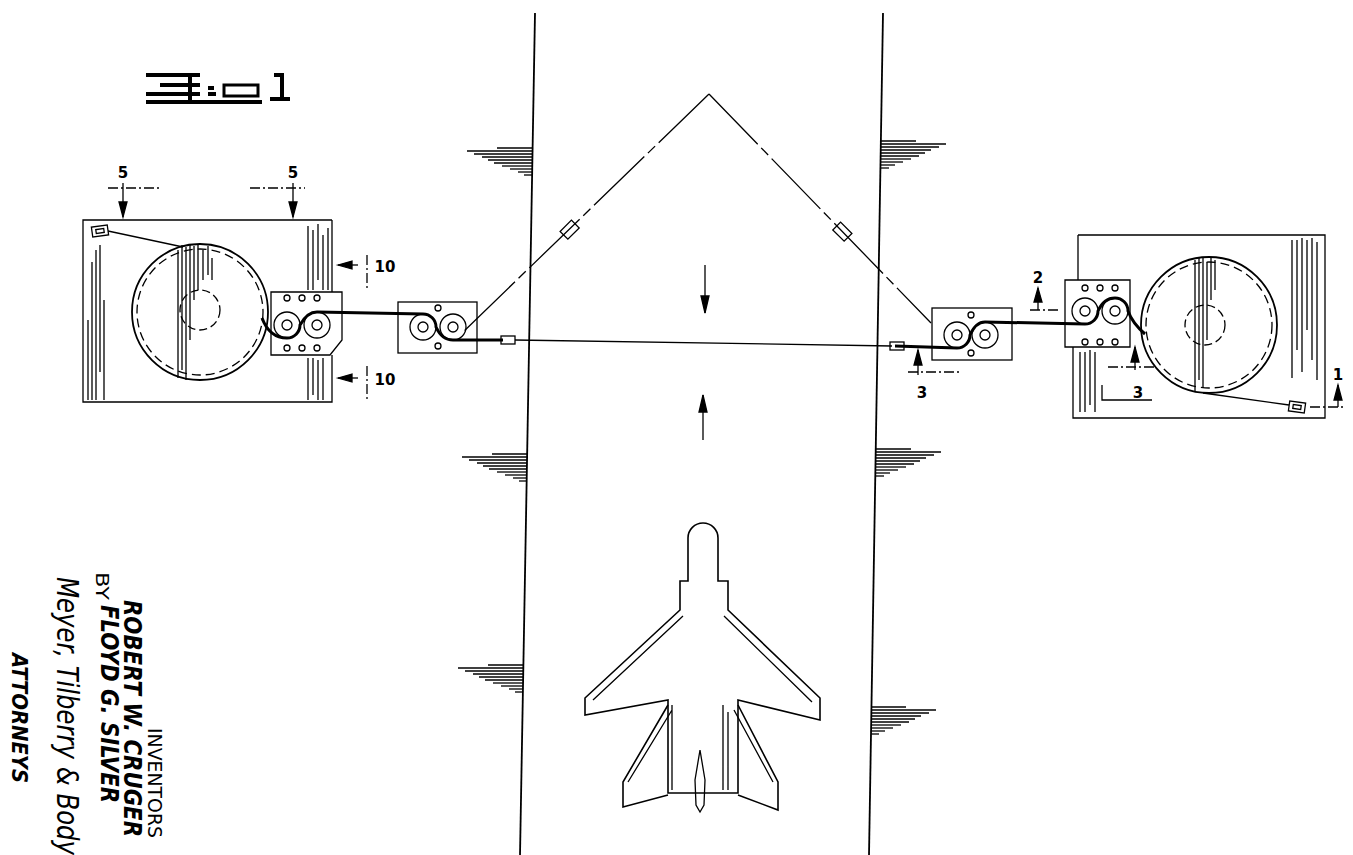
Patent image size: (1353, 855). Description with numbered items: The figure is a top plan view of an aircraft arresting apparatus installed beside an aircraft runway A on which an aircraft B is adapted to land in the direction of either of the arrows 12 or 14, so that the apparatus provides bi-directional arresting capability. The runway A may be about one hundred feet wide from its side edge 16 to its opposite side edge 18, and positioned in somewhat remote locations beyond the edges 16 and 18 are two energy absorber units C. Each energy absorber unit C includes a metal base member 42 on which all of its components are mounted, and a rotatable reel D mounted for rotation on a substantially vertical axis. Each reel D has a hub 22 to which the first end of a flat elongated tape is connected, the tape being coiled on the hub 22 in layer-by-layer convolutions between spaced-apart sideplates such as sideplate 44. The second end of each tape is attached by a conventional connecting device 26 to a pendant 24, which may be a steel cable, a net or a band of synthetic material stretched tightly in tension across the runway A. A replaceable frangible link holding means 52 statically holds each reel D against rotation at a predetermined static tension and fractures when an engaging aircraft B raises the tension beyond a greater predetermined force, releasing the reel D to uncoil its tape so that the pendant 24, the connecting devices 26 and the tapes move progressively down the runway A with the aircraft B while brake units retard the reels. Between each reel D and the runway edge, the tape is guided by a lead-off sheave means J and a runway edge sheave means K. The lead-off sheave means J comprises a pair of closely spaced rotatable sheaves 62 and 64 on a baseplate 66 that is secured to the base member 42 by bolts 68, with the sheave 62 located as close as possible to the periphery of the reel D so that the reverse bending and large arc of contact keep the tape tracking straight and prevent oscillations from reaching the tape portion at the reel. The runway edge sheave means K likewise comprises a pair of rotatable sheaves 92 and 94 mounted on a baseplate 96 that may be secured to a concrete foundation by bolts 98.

The arrow 12 is at (706, 282).
The arrow 14 is at (705, 420).
The side edge 16 is at (525, 558).
The side edge 18 is at (874, 587).
The hub 22 is at (178, 322).
The pendant 24 is at (655, 343).
The connecting device 26 is at (515, 338).
The base member 42 is at (85, 268).
The sideplate 44 is at (215, 252).
The frangible link holding means 52 is at (165, 241).
The sheave 62 is at (286, 296).
The sheave 64 is at (330, 328).
The baseplate 66 is at (332, 392).
The bolts 68 is at (285, 352).
The sheave 92 is at (455, 314).
The sheave 94 is at (400, 352).
The baseplate 96 is at (478, 352).
The bolts 98 is at (438, 305).
The aircraft runway A is at (855, 103).
The aircraft B is at (720, 548).
The energy absorber unit C is at (83, 218).
The reel D is at (157, 367).
The lead-off sheave means J is at (320, 290).
The runway edge sheave means K is at (443, 360).